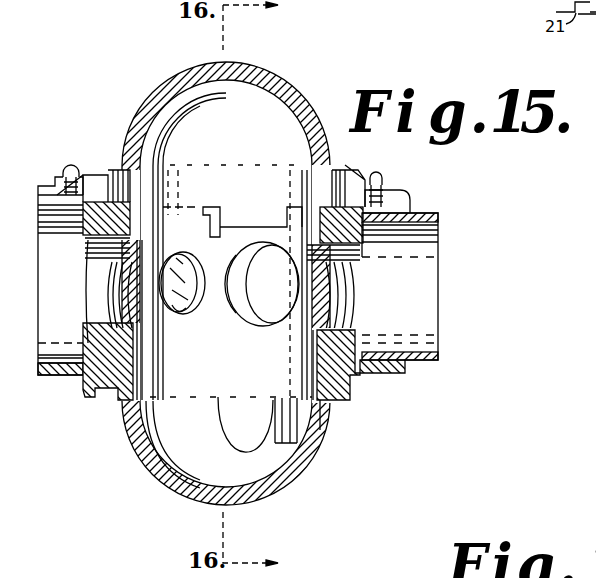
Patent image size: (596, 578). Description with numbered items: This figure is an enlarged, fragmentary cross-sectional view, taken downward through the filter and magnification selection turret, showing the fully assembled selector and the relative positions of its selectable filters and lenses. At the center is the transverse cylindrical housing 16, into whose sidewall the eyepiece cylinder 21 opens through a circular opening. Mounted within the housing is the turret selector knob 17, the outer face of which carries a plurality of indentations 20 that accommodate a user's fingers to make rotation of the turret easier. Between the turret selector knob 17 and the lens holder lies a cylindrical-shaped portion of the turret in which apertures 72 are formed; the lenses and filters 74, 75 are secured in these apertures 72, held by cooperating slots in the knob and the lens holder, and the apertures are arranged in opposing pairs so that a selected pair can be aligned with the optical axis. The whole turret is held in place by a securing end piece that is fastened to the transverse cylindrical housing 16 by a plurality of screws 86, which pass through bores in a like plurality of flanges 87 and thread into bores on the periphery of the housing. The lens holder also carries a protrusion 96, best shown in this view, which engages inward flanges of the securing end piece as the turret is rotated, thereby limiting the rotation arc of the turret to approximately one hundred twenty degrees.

The transverse cylindrical housing 16 is at (85, 394).
The turret selector knob 17 is at (270, 488).
The indentations 20 is at (232, 420).
The eyepiece cylinder 21 is at (44, 195).
The apertures 72 is at (196, 266).
The lens 74 is at (115, 278).
The lens 75 is at (180, 306).
The screws 86 is at (72, 170).
The flanges 87 is at (390, 184).
The protrusion 96 is at (207, 208).